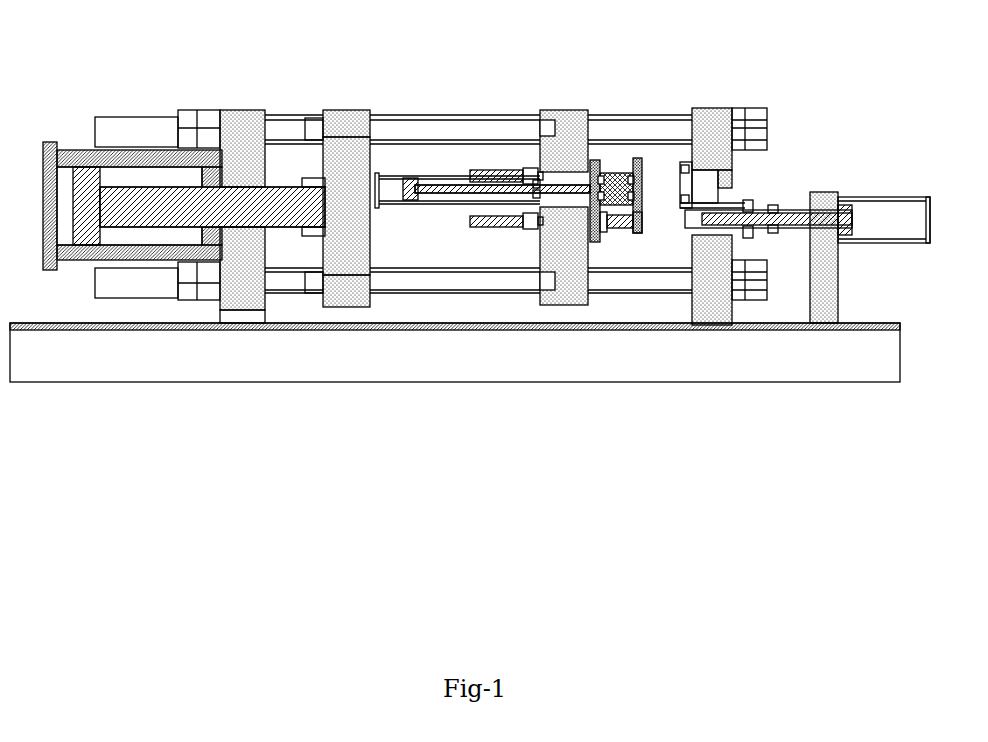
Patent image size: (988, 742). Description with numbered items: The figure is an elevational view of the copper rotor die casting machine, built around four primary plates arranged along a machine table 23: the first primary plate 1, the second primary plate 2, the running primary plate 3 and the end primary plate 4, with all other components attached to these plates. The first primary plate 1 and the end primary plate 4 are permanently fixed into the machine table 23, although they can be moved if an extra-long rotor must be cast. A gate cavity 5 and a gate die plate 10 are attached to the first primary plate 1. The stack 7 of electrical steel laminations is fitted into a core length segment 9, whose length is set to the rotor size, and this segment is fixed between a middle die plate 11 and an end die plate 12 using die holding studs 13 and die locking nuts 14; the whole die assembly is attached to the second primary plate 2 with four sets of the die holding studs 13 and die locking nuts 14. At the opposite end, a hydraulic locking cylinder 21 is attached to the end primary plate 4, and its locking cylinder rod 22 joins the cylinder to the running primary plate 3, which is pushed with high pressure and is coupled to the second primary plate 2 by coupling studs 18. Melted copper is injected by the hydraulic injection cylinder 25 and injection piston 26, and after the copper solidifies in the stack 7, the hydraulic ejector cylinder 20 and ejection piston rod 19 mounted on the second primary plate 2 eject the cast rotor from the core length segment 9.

The first primary plate 1 is at (710, 105).
The second primary plate 2 is at (570, 107).
The running primary plate 3 is at (348, 107).
The end primary plate 4 is at (240, 107).
The gate cavity 5 is at (672, 203).
The stack of electrical steel laminations 7 is at (644, 178).
The core length segment 9 is at (618, 169).
The gate die plate 10 is at (680, 157).
The middle die plate 11 is at (637, 241).
The end die plate 12 is at (600, 157).
The die holding stud 13 is at (500, 164).
The die locking nut 14 is at (527, 164).
The coupling stud 18 is at (450, 111).
The ejection piston rod 19 is at (400, 189).
The hydraulic ejector cylinder 20 is at (388, 162).
The hydraulic locking cylinder 21 is at (73, 141).
The locking cylinder rod 22 is at (287, 181).
The machine table 23 is at (23, 322).
The hydraulic injection cylinder 25 is at (860, 189).
The injection piston 26 is at (805, 211).